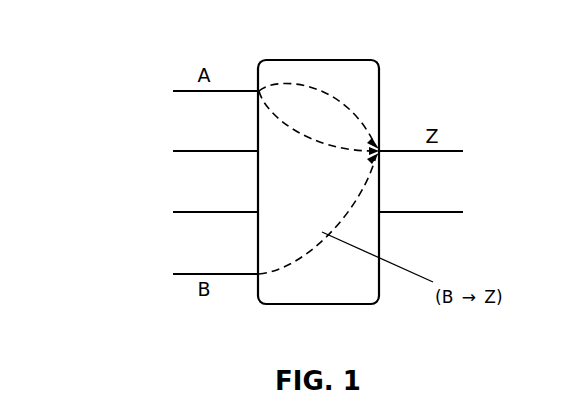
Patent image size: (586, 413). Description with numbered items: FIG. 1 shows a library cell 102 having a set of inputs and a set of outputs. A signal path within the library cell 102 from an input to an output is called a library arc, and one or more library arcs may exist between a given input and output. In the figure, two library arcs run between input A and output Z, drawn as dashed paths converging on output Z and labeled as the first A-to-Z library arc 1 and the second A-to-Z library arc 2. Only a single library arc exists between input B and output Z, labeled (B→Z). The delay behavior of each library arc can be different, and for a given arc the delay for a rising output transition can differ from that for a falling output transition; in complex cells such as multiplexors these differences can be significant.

The library cell 102 is at (318, 198).
The first library arc from input A to output Z 1 is at (353, 112).
The second library arc from input A to output Z 2 is at (273, 108).